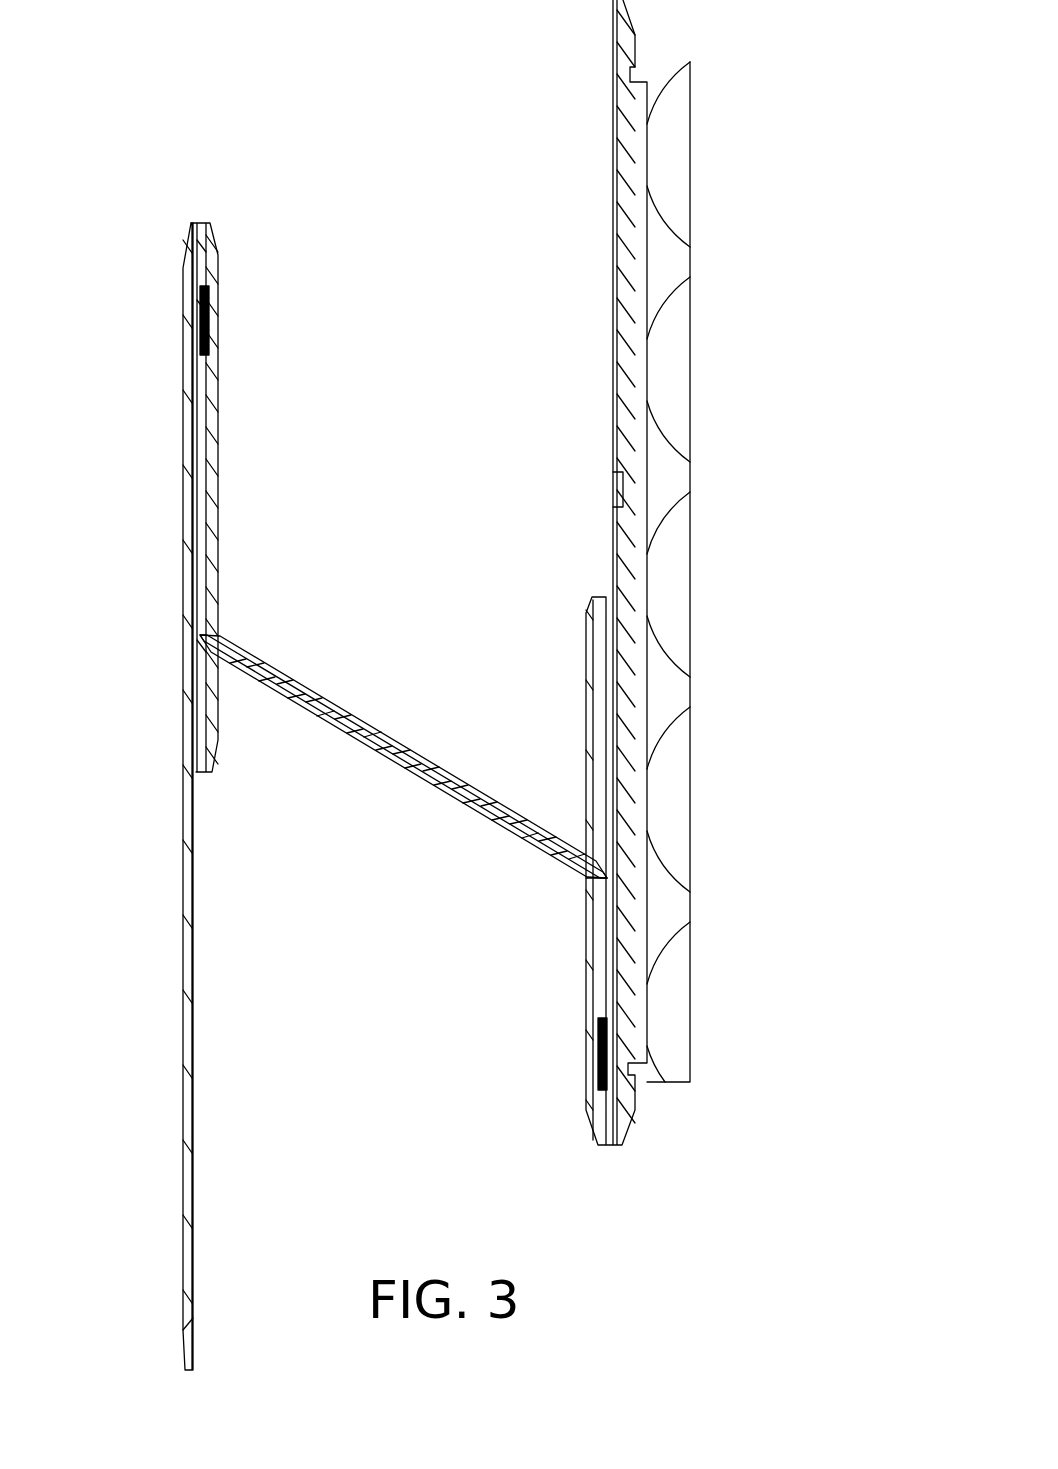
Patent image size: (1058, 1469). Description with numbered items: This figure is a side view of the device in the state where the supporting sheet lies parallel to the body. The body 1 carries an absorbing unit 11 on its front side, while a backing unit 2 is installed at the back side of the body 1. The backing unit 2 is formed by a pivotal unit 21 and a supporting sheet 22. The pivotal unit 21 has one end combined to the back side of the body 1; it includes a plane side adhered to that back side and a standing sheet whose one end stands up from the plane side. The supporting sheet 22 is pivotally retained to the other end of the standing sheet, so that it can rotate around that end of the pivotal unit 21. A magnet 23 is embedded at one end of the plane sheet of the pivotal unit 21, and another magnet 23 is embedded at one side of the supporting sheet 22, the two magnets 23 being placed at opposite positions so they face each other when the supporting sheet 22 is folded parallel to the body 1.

The body 1 is at (630, 1120).
The absorbing unit 11 is at (690, 530).
The backing unit 2 is at (282, 205).
The pivotal unit 21 is at (405, 748).
The supporting sheet 22 is at (182, 1010).
The magnet 23 is at (610, 302).